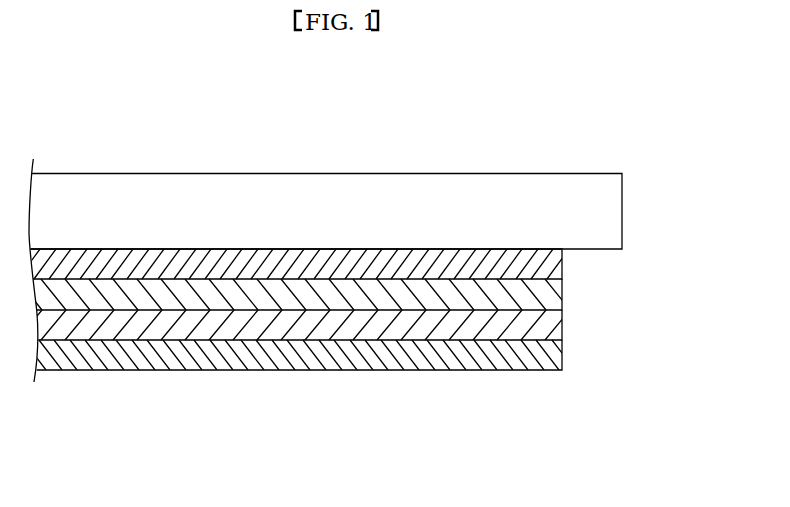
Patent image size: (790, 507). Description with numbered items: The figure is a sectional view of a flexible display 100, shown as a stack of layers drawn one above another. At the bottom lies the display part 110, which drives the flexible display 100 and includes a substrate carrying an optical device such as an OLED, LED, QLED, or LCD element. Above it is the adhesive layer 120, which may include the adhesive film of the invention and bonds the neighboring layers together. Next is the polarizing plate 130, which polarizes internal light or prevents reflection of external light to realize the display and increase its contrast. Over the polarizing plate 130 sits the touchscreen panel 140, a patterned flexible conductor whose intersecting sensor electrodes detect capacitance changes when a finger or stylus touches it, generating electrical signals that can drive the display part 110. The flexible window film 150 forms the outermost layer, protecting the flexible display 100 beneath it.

The flexible display 100 is at (569, 153).
The display part 110 is at (545, 352).
The adhesive layer 120 is at (545, 323).
The polarizing plate 130 is at (548, 294).
The touchscreen panel 140 is at (545, 265).
The flexible window film 150 is at (605, 211).